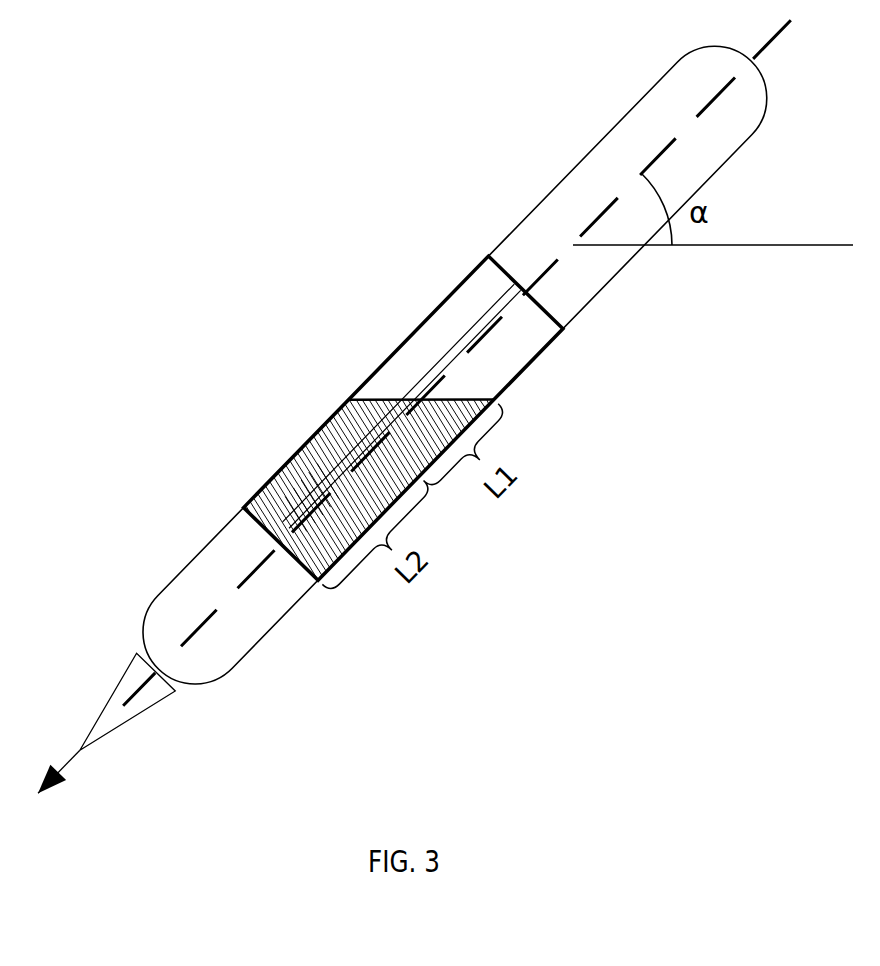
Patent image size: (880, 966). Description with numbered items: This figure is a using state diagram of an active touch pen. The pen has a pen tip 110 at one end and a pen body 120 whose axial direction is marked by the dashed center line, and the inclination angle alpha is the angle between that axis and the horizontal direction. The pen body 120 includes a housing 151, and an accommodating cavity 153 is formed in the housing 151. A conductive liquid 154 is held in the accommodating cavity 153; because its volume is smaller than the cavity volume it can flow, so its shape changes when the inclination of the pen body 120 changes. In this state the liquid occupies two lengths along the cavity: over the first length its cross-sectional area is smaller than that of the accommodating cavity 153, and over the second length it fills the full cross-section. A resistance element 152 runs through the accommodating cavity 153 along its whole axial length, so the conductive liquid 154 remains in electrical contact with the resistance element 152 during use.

The pen tip 110 is at (118, 690).
The pen body 120 is at (563, 175).
The housing 151 is at (310, 443).
The resistance element 152 is at (463, 340).
The accommodating cavity 153 is at (393, 352).
The conductive liquid 154 is at (313, 482).